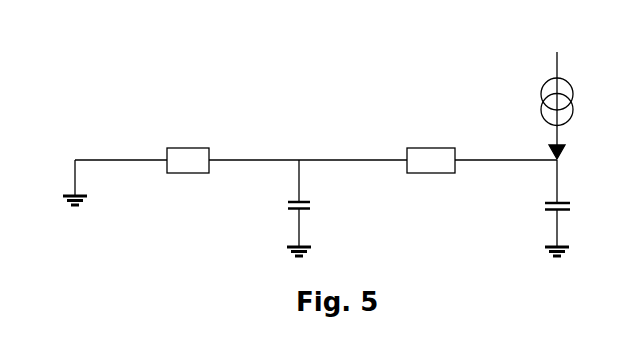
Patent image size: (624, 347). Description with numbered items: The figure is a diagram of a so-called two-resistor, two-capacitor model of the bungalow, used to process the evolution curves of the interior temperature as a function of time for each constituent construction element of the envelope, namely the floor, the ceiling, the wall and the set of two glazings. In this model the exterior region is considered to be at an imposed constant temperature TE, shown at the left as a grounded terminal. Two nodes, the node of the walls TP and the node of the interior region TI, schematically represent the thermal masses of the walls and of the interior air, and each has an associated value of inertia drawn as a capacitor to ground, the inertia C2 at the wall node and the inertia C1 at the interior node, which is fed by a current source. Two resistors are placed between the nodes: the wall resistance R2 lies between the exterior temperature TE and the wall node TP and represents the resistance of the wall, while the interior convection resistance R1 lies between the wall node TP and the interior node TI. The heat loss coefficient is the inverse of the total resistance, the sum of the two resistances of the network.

The exterior temperature TE is at (59, 168).
The node of the walls TP is at (287, 164).
The node of the interior region TI is at (568, 111).
The interior convection resistance R1 is at (431, 178).
The wall resistance R2 is at (188, 179).
The inertia of the interior air node C1 is at (537, 208).
The inertia of the wall node C2 is at (313, 228).